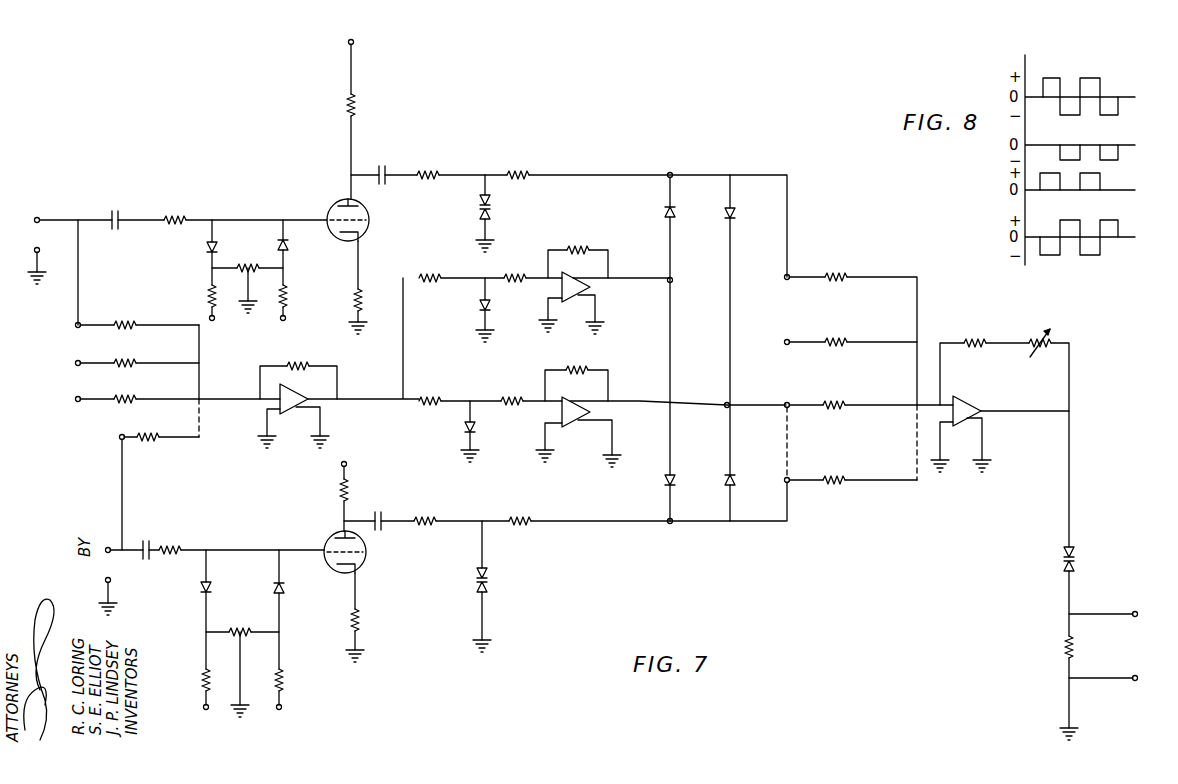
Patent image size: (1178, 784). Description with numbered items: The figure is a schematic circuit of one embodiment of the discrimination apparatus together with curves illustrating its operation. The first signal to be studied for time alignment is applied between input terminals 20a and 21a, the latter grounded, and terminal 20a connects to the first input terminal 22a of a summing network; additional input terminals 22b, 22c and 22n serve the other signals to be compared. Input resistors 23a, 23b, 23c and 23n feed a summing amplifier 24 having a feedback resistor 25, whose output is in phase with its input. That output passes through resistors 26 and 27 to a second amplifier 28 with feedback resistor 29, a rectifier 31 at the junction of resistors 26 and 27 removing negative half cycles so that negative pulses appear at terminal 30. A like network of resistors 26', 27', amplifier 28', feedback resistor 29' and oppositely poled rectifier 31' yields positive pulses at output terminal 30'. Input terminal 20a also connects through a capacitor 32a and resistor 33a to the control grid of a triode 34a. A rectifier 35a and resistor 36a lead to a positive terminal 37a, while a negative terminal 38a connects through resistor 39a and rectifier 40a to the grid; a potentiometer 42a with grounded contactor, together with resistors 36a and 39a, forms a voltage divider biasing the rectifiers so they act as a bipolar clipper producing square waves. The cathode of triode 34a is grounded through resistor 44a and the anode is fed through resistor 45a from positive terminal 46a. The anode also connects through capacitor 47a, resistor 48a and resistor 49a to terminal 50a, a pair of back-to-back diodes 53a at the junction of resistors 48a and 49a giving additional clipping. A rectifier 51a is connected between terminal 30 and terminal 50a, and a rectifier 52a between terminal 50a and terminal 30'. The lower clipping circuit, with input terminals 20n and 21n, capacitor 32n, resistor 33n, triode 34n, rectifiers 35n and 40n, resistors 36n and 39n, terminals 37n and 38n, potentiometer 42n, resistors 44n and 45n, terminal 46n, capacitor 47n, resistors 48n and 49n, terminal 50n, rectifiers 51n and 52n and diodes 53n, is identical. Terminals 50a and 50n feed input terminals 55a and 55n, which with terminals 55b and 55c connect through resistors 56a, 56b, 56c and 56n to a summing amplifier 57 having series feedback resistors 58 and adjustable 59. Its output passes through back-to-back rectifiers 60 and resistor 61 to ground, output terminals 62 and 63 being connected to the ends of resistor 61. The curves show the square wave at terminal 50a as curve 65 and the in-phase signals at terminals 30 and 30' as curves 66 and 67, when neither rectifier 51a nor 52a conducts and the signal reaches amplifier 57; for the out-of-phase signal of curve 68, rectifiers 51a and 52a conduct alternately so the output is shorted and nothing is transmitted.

In FIG. 7, the input terminal 20a is at (38, 217).
In FIG. 7, the input terminal 20n is at (107, 546).
In FIG. 7, the input terminal 21a is at (40, 250).
In FIG. 7, the input terminal 21n is at (111, 580).
In FIG. 7, the first input terminal of summing network 22a is at (76, 325).
In FIG. 7, the input terminal of summing network 22b is at (78, 361).
In FIG. 7, the input terminal of summing network 22c is at (78, 397).
In FIG. 7, the input terminal of summing network 22n is at (120, 437).
In FIG. 7, the input resistor 23a is at (122, 320).
In FIG. 7, the input resistor 23b is at (135, 362).
In FIG. 7, the input resistor 23c is at (136, 398).
In FIG. 7, the input resistor 23n is at (151, 441).
In FIG. 7, the summing amplifier 24 is at (312, 412).
In FIG. 7, the feedback resistor 25 is at (298, 362).
In FIG. 7, the resistor 26 is at (430, 260).
In FIG. 7, the resistor 26' is at (429, 383).
In FIG. 7, the resistor 27 is at (515, 260).
In FIG. 7, the resistor 27' is at (503, 383).
In FIG. 7, the second amplifier 28 is at (581, 303).
In FIG. 7, the second amplifier 28' is at (589, 432).
In FIG. 7, the feedback resistor 29 is at (578, 245).
In FIG. 7, the feedback resistor 29' is at (584, 369).
In FIG. 7, the terminal 30 is at (654, 295).
In FIG. 7, the output terminal 30' is at (747, 414).
In FIG. 7, the rectifier 31 is at (470, 310).
In FIG. 7, the rectifier 31' is at (487, 431).
In FIG. 7, the capacitor 32a is at (116, 211).
In FIG. 7, the capacitor 32n is at (147, 540).
In FIG. 7, the resistor 33a is at (177, 213).
In FIG. 7, the resistor 33n is at (178, 542).
In FIG. 7, the triode 34a is at (333, 203).
In FIG. 7, the triode 34n is at (334, 532).
In FIG. 7, the rectifier 35a is at (206, 247).
In FIG. 7, the rectifier 35n is at (200, 587).
In FIG. 7, the resistor 36a is at (207, 294).
In FIG. 7, the resistor 36n is at (201, 680).
In FIG. 7, the terminal 37a is at (209, 318).
In FIG. 7, the terminal 37n is at (203, 708).
In FIG. 7, the terminal 38a is at (286, 318).
In FIG. 7, the terminal 38n is at (282, 708).
In FIG. 7, the resistor 39a is at (285, 294).
In FIG. 7, the resistor 39n is at (284, 680).
In FIG. 7, the rectifier 40a is at (288, 245).
In FIG. 7, the rectifier 40n is at (285, 589).
In FIG. 7, the potentiometer 42a is at (247, 262).
In FIG. 7, the potentiometer 42n is at (239, 626).
In FIG. 7, the resistor 44a is at (360, 292).
In FIG. 7, the resistor 44n is at (358, 612).
In FIG. 7, the resistor 45a is at (350, 100).
In FIG. 7, the resistor 45n is at (343, 488).
In FIG. 7, the terminal 46a is at (354, 42).
In FIG. 7, the terminal 46n is at (347, 464).
In FIG. 7, the capacitor 47a is at (384, 170).
In FIG. 7, the capacitor 47n is at (379, 516).
In FIG. 7, the resistor 48a is at (430, 170).
In FIG. 7, the resistor 48n is at (428, 516).
In FIG. 7, the resistor 49a is at (519, 170).
In FIG. 7, the resistor 49n is at (520, 516).
In FIG. 7, the terminal 50a is at (670, 172).
In FIG. 7, the terminal 50n is at (671, 524).
In FIG. 7, the rectifier 51a is at (664, 212).
In FIG. 7, the rectifier 51n is at (664, 481).
In FIG. 7, the rectifier 52a is at (736, 213).
In FIG. 7, the rectifier 52n is at (724, 480).
In FIG. 7, the pair of diodes 53a is at (491, 208).
In FIG. 7, the pair of diodes 53n is at (490, 580).
In FIG. 7, the first input terminal of second summing circuit 55a is at (784, 277).
In FIG. 7, the input terminal of second summing circuit 55b is at (784, 342).
In FIG. 7, the input terminal of second summing circuit 55c is at (784, 403).
In FIG. 7, the input terminal of second summing circuit 55n is at (784, 479).
In FIG. 7, the resistor 56a is at (838, 272).
In FIG. 7, the resistor 56b is at (838, 337).
In FIG. 7, the resistor 56c is at (838, 400).
In FIG. 7, the resistor 56n is at (838, 474).
In FIG. 7, the summing amplifier 57 is at (961, 400).
In FIG. 7, the feedback resistor 58 is at (975, 340).
In FIG. 7, the feedback resistor 59 is at (1036, 340).
In FIG. 7, the pair of back-to-back rectifiers 60 is at (1062, 556).
In FIG. 7, the resistor 61 is at (1062, 647).
In FIG. 7, the output terminal 62 is at (1135, 612).
In FIG. 7, the output terminal 63 is at (1135, 681).
In FIG. 8, the curve 65 is at (1051, 77).
In FIG. 8, the curve 66 is at (1080, 164).
In FIG. 8, the curve 67 is at (1053, 172).
In FIG. 8, the curve 68 is at (1064, 258).